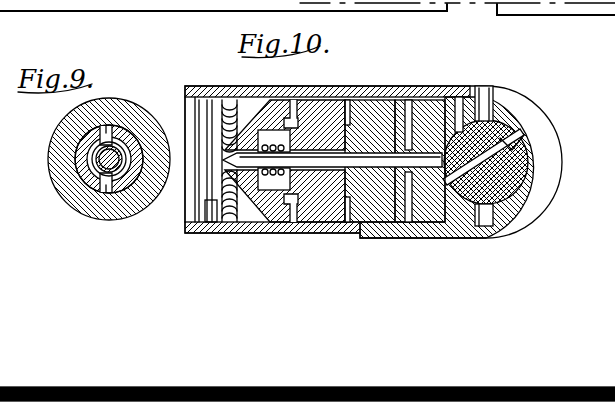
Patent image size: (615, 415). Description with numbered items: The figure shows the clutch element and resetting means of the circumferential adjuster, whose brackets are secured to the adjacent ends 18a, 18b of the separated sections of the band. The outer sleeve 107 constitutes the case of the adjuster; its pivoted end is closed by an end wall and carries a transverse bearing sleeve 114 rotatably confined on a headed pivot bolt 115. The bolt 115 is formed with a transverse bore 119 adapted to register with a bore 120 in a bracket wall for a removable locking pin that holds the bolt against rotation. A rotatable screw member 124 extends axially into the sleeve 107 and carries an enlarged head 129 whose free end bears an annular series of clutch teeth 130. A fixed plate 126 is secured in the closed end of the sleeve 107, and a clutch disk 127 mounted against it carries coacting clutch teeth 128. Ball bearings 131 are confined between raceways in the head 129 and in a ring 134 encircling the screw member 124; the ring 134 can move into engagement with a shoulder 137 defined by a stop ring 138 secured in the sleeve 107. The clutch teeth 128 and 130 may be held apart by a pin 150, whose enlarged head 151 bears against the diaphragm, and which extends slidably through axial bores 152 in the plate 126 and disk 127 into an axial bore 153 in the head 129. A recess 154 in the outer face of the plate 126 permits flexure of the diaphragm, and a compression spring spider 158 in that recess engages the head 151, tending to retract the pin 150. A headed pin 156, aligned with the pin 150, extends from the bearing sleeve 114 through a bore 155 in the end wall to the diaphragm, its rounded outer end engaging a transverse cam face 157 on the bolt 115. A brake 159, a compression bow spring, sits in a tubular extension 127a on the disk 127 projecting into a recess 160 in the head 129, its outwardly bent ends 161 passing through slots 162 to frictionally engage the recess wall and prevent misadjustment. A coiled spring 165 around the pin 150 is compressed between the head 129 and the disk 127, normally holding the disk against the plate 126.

In FIG. 10, the outer sleeve 107 is at (225, 86).
In FIG. 10, the transverse bearing sleeve 114 is at (522, 110).
In FIG. 10, the headed pivot bolt 115 is at (530, 178).
In FIG. 10, the transverse bore 119 is at (526, 147).
In FIG. 10, the bore 120 is at (498, 88).
In FIG. 10, the rotatable screw member 124 is at (188, 86).
In FIG. 10, the fixed plate 126 is at (365, 242).
In FIG. 10, the clutch disk 127 is at (338, 234).
In FIG. 9, the tubular extension 127a is at (96, 163).
In FIG. 10, the tubular extension 127a is at (295, 130).
In FIG. 10, the clutch teeth 128 is at (305, 234).
In FIG. 9, the enlarged head 129 is at (62, 147).
In FIG. 10, the enlarged head 129 is at (232, 234).
In FIG. 10, the clutch teeth 130 is at (280, 234).
In FIG. 10, the ball bearings 131 is at (230, 108).
In FIG. 10, the ring 134 is at (210, 205).
In FIG. 10, the shoulder 137 is at (186, 135).
In FIG. 10, the stop ring 138 is at (190, 228).
In FIG. 10, the pin 150 is at (370, 110).
In FIG. 10, the enlarged head 151 is at (400, 97).
In FIG. 10, the axial bores 152 is at (344, 236).
In FIG. 10, the axial bore 153 is at (210, 228).
In FIG. 10, the recess 154 is at (390, 240).
In FIG. 10, the bore 155 is at (448, 240).
In FIG. 10, the headed pin 156 is at (455, 100).
In FIG. 10, the transverse cam face 157 is at (478, 96).
In FIG. 10, the compression spring spider 158 is at (372, 242).
In FIG. 9, the brake 159 is at (100, 170).
In FIG. 9, the recess 160 is at (127, 190).
In FIG. 10, the recess 160 is at (245, 234).
In FIG. 9, the outwardly bent ends 161 is at (92, 133).
In FIG. 9, the slots 162 is at (112, 128).
In FIG. 10, the coiled spring 165 is at (270, 234).
In FIG. 10, the band section end 18a is at (568, 28).
In FIG. 10, the band section end 18b is at (400, 15).